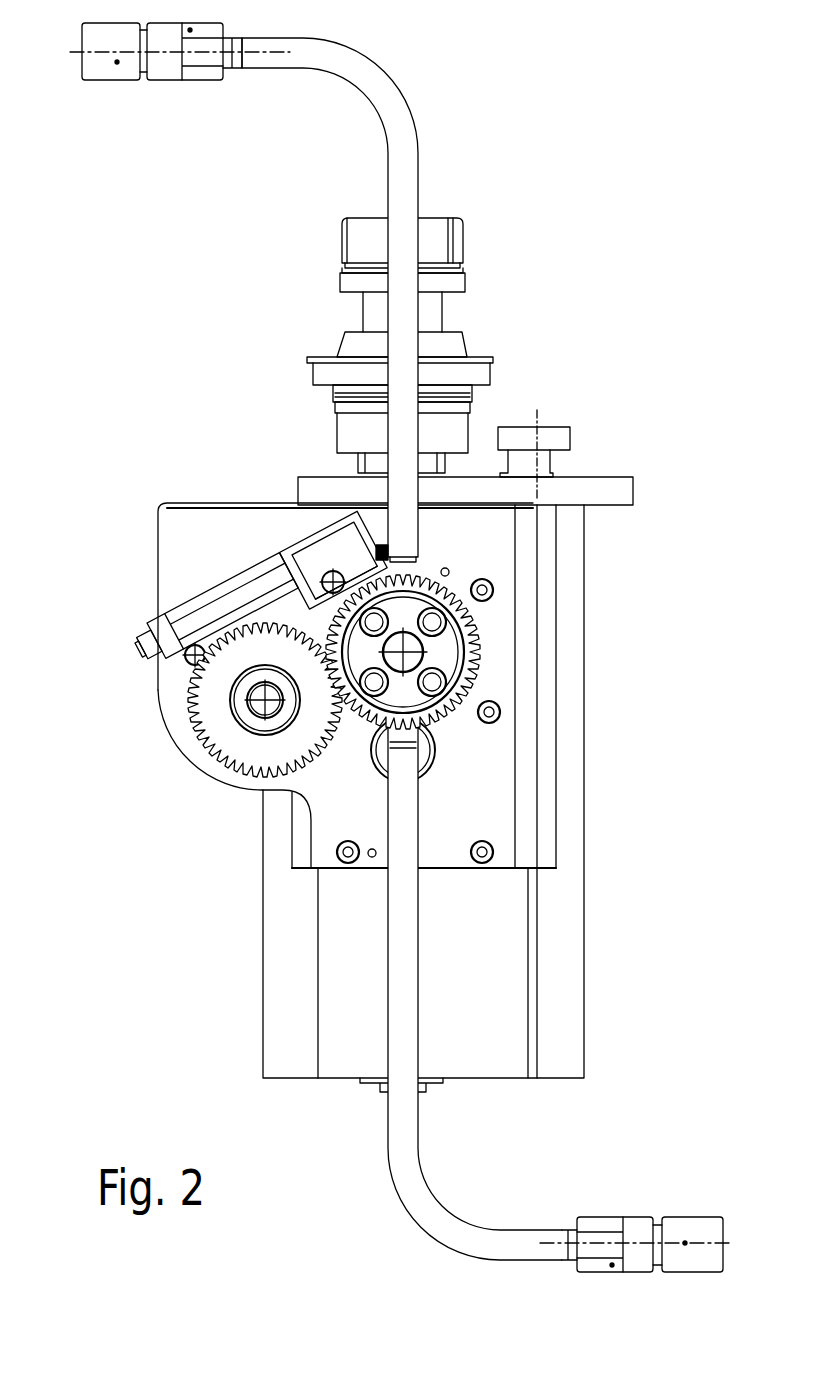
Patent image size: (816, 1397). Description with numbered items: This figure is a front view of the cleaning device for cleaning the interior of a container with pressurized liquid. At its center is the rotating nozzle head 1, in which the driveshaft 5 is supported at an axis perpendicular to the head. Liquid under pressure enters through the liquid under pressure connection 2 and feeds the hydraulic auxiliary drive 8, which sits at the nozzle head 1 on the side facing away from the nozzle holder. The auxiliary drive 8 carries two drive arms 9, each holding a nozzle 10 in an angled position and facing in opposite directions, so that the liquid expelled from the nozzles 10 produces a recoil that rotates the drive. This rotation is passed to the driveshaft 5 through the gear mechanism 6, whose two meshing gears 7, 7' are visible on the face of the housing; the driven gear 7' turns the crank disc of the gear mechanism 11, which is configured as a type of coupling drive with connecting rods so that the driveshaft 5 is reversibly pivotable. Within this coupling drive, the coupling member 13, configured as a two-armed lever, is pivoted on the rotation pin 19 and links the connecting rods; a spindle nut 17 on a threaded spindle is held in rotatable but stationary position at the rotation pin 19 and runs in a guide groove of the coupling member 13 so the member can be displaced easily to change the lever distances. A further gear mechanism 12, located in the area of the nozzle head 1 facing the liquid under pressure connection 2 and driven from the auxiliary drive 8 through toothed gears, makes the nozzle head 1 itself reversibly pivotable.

The nozzle head 1 is at (258, 1032).
The liquid under pressure connection 2 is at (428, 237).
The driveshaft 5 is at (410, 657).
The gear mechanism 6 is at (312, 777).
The gear 7 is at (489, 652).
The driven gear 7' is at (265, 759).
The hydraulic auxiliary drive 8 is at (427, 537).
The drive arms 9 is at (388, 106).
The nozzle 10 is at (125, 72).
The gear mechanism 11 is at (180, 673).
The further gear mechanism 12 is at (545, 412).
The coupling member 13 is at (192, 620).
The spindle nut 17 is at (288, 563).
The rotation pin 19 is at (333, 582).